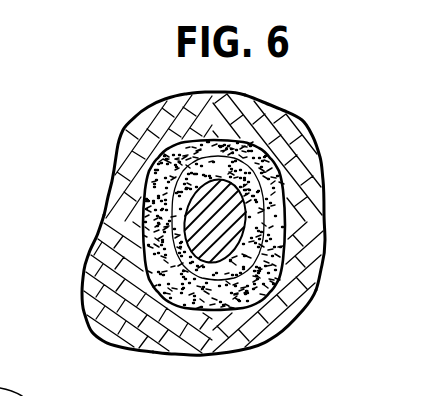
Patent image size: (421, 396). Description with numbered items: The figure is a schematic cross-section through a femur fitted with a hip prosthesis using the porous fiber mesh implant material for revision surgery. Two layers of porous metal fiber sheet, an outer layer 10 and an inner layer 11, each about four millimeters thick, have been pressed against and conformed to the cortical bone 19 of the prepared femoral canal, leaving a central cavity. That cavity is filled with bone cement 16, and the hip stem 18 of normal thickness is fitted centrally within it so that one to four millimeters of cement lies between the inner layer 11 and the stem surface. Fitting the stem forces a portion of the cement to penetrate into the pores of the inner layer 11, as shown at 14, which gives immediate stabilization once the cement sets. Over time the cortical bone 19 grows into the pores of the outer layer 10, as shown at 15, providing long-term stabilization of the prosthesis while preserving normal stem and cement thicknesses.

The outer layer of porous metal fiber sheet 10 is at (223, 307).
The inner layer of porous metal fiber sheet 11 is at (277, 327).
The cement penetration into inner layer 14 is at (110, 207).
The bone ingrowth into outer layer 15 is at (72, 268).
The bone cement 16 is at (288, 187).
The hip stem 18 is at (280, 235).
The cortical bone 19 is at (310, 277).